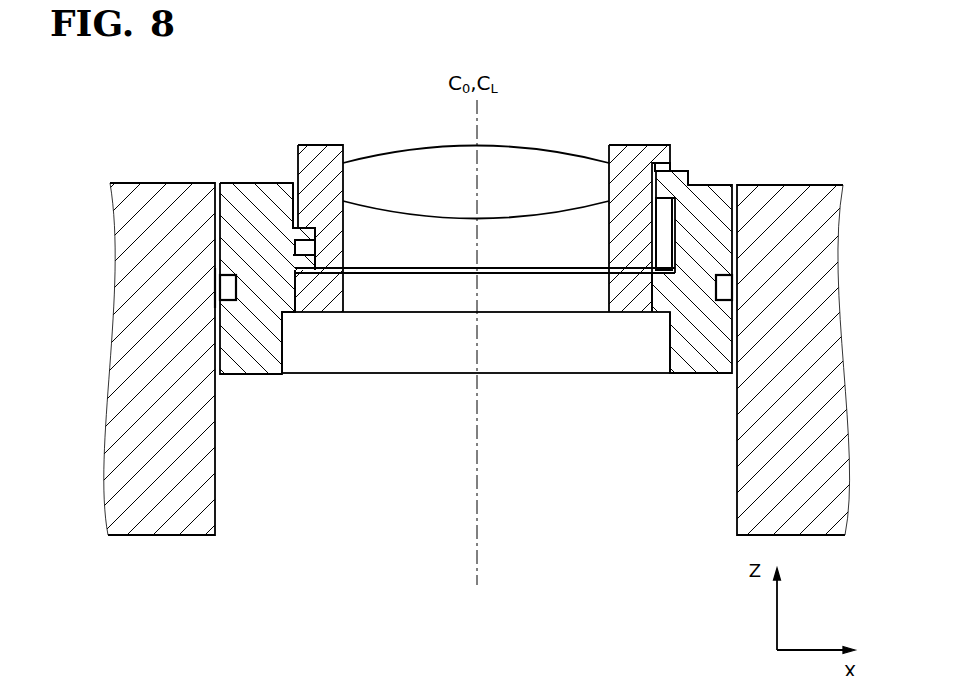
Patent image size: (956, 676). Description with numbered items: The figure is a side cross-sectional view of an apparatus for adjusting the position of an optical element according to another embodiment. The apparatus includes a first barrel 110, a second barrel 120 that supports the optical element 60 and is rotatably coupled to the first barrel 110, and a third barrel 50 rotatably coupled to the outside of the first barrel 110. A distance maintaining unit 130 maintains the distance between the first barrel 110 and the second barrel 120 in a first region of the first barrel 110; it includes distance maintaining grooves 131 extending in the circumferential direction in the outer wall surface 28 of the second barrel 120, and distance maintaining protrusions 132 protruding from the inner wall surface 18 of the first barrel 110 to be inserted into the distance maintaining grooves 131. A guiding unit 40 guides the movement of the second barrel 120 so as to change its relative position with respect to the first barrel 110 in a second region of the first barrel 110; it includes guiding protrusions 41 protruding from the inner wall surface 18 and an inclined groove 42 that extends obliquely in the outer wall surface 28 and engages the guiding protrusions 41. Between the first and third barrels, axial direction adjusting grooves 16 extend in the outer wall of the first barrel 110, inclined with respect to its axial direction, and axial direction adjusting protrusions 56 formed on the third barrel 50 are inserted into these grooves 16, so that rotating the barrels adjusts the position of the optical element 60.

The third barrel 50 is at (157, 556).
The axial direction adjusting protrusions 56 is at (220, 287).
The axial direction adjusting grooves 16 is at (234, 325).
The inner wall surface 18 is at (298, 226).
The outer wall surface 28 is at (300, 240).
The first barrel 110 is at (249, 389).
The second barrel 120 is at (317, 140).
The distance maintaining unit 130 is at (342, 354).
The distance maintaining grooves 131 is at (316, 252).
The distance maintaining protrusions 132 is at (299, 252).
The optical element 60 is at (543, 168).
The guiding unit 40 is at (685, 161).
The guiding protrusions 41 is at (661, 177).
The inclined groove 42 is at (660, 132).